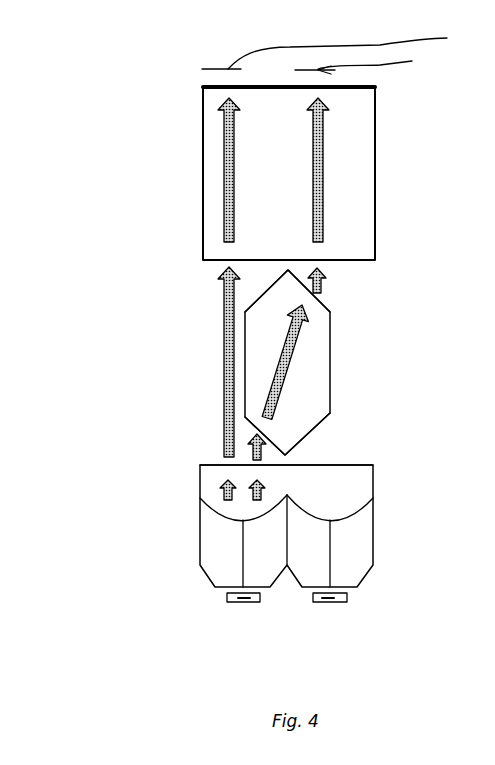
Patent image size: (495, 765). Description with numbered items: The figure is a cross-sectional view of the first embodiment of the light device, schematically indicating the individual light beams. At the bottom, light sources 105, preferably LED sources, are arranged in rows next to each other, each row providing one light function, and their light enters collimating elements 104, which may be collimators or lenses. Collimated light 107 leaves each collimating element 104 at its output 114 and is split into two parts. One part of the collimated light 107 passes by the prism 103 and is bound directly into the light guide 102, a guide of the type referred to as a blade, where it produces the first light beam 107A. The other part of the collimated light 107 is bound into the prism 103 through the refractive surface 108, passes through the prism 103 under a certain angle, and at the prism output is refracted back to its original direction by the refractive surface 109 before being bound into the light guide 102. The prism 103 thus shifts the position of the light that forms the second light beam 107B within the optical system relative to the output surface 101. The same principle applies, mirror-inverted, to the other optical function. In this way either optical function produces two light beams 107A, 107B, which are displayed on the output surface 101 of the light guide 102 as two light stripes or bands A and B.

The light stripe A is at (334, 48).
The light stripe B is at (363, 62).
The output surface 101 is at (375, 87).
The light guide 102 is at (358, 172).
The prism 103 is at (322, 328).
The collimating element 104 is at (265, 550).
The light source 105 is at (257, 598).
The collimated light 107 is at (253, 487).
The first light beam 107A is at (223, 175).
The second light beam 107B is at (322, 148).
The refractive surface 108 is at (260, 425).
The refractive surface 109 is at (272, 288).
The output 114 is at (353, 463).